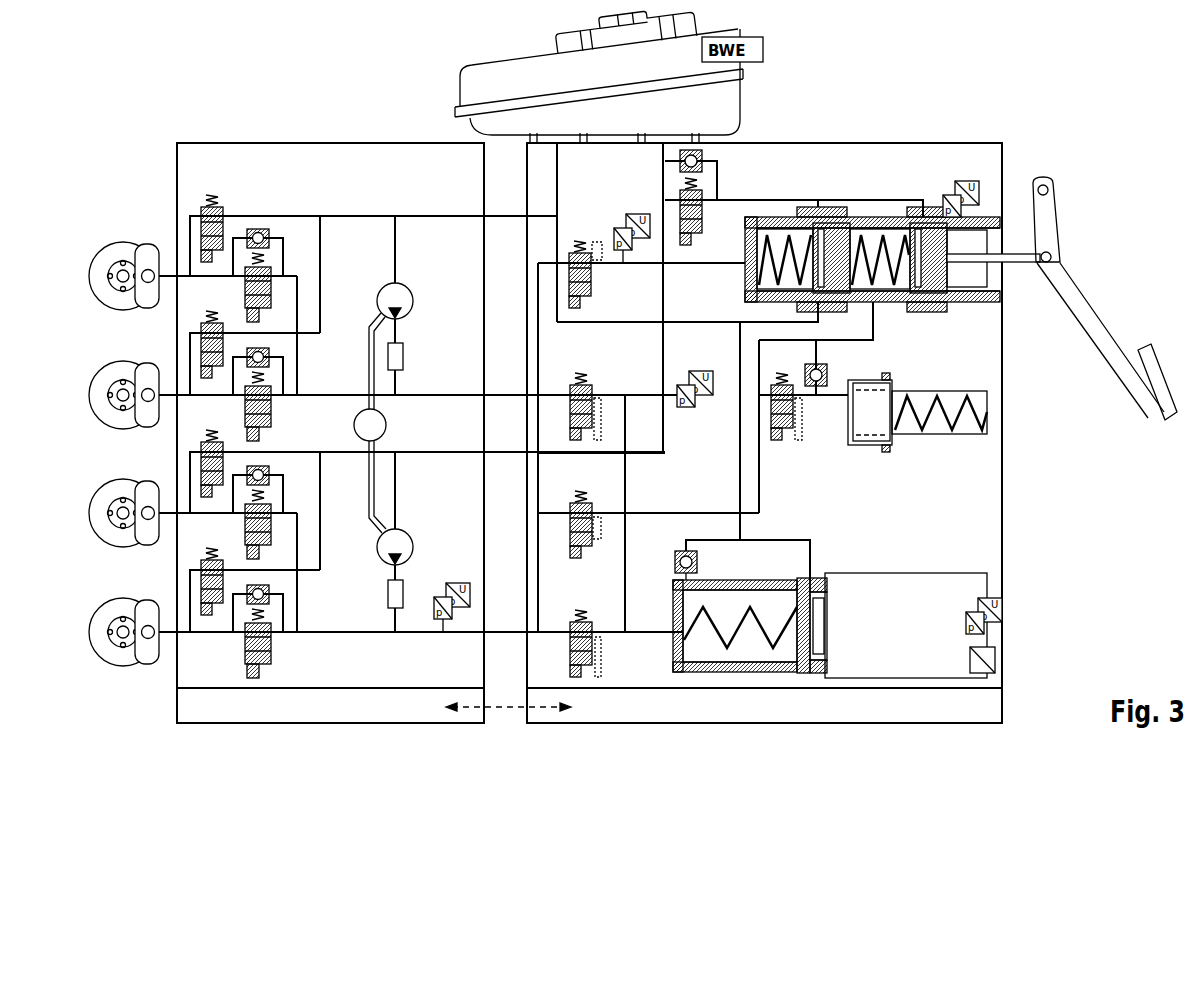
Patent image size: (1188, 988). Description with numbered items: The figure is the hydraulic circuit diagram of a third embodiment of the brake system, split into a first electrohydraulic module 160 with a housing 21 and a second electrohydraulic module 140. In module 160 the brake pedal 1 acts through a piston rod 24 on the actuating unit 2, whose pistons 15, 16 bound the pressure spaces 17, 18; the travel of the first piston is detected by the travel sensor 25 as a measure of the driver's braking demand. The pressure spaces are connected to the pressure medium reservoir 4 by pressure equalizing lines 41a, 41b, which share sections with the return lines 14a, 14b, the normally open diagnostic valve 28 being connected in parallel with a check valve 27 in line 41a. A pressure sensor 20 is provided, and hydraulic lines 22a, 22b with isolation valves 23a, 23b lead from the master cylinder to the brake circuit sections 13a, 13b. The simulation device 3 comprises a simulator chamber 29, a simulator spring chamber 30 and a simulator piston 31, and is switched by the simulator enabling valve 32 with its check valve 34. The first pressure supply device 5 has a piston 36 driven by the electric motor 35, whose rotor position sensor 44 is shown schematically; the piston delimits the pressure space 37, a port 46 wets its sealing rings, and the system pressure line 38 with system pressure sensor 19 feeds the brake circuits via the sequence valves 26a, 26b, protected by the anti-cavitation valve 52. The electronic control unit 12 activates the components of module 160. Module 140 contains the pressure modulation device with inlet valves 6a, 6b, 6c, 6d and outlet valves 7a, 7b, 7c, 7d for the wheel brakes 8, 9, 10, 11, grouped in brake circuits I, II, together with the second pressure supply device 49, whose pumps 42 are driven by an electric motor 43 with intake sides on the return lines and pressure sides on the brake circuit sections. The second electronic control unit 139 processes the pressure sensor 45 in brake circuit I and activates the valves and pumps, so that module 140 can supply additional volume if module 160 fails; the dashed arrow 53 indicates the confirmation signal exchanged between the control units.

The brake pedal 1 is at (1095, 312).
The actuating unit 2 is at (879, 217).
The simulation device 3 is at (937, 360).
The pressure medium reservoir 4 is at (505, 78).
The first electrically controllable pressure supply device 5 is at (885, 576).
The inlet valve 6a is at (245, 281).
The inlet valve 6b is at (245, 399).
The inlet valve 6c is at (245, 517).
The inlet valve 6d is at (245, 636).
The outlet valve 7a is at (202, 229).
The outlet valve 7b is at (202, 347).
The outlet valve 7c is at (202, 466).
The outlet valve 7d is at (202, 585).
The wheel brake 8 is at (150, 300).
The wheel brake 9 is at (150, 419).
The wheel brake 10 is at (150, 537).
The wheel brake 11 is at (150, 656).
The electronic control unit 12 is at (898, 708).
The brake circuit section 13a is at (300, 612).
The brake circuit section 13b is at (300, 362).
The return line 14a is at (662, 150).
The return line 14b is at (559, 172).
The piston 15 is at (950, 300).
The piston 16 is at (846, 276).
The pressure space 17 is at (894, 278).
The pressure space 18 is at (777, 235).
The pressure sensor 19 is at (707, 398).
The pressure sensor 20 is at (615, 226).
The housing 21 is at (963, 157).
The hydraulic line 22a is at (690, 512).
The hydraulic line 22b is at (688, 265).
The isolation valve 23a is at (582, 550).
The isolation valve 23b is at (592, 290).
The piston rod 24 is at (1020, 265).
The travel sensor 25 is at (975, 184).
The sequence valve 26a is at (573, 622).
The sequence valve 26b is at (592, 384).
The check valve 27 is at (703, 161).
The diagnostic valve 28 is at (703, 225).
The simulator chamber 29 is at (850, 442).
The simulator spring chamber 30 is at (965, 437).
The simulator piston 31 is at (868, 430).
The simulator enabling valve 32 is at (775, 430).
The check valve 34 is at (829, 373).
The electric motor 35 is at (938, 582).
The piston 36 is at (789, 675).
The pressure space 37 is at (680, 652).
The system pressure line 38 is at (622, 470).
The pressure equalizing line 41a is at (857, 197).
The pressure equalizing line 41b is at (757, 318).
The pump 42 is at (407, 290).
The electric motor 43 is at (387, 425).
The rotor position sensor 44 is at (1005, 620).
The pressure sensor 45 is at (449, 582).
The port 46 is at (826, 596).
The second electrically controllable pressure supply device 49 is at (430, 317).
The anti-cavitation valve 52 is at (674, 561).
The dashed arrow 53 is at (515, 722).
The second electronic control unit 139 is at (377, 710).
The second electrohydraulic module 140 is at (312, 138).
The first electrohydraulic module 160 is at (906, 138).
The brake circuit I is at (470, 636).
The brake circuit II is at (464, 393).